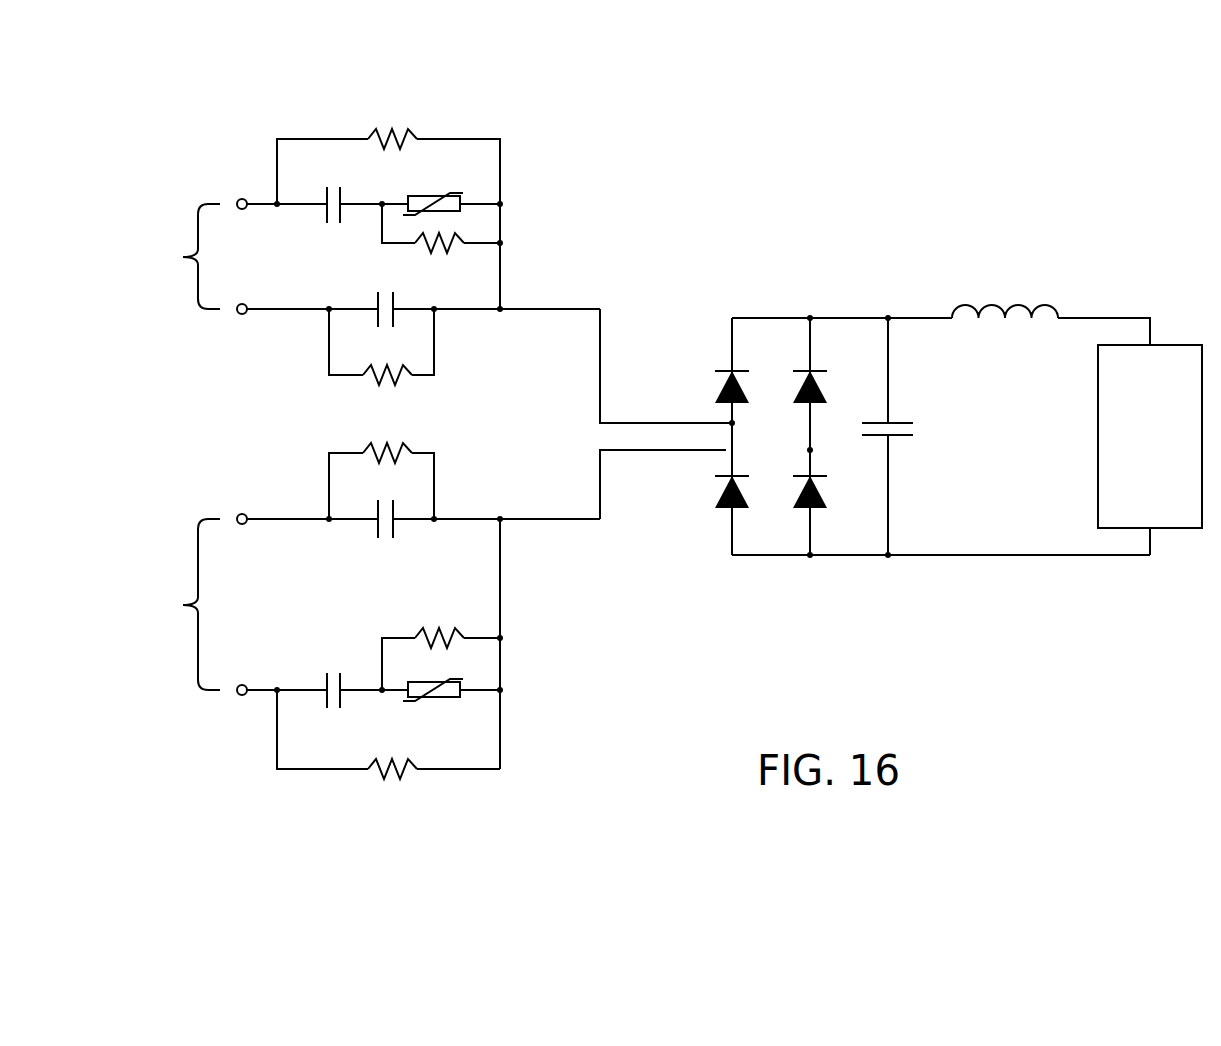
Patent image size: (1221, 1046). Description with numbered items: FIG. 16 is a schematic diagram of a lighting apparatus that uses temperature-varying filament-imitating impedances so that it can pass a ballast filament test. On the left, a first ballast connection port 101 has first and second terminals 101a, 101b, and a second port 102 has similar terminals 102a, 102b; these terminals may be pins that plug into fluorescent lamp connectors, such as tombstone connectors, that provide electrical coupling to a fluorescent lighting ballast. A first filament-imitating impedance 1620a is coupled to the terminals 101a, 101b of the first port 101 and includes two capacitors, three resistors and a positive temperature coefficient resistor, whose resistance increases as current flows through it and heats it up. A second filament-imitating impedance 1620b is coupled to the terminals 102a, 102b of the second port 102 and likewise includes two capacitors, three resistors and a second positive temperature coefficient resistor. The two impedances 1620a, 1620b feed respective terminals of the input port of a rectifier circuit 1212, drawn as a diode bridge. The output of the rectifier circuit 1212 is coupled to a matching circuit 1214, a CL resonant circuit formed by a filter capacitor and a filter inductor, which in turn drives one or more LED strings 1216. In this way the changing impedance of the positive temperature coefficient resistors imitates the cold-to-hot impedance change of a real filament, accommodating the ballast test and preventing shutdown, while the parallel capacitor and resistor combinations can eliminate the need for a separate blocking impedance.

The ballast connection port 101 is at (183, 256).
The first terminal 101a is at (250, 222).
The second terminal 101b is at (255, 289).
The second port 102 is at (183, 604).
The first terminal of second port 102a is at (268, 540).
The second terminal of second port 102b is at (251, 672).
The first filament-imitating impedance 1620a is at (478, 106).
The second filament-imitating impedance 1620b is at (505, 791).
The rectifier circuit 1212 is at (793, 292).
The matching circuit 1214 is at (1033, 256).
The LED string 1216 is at (1098, 437).